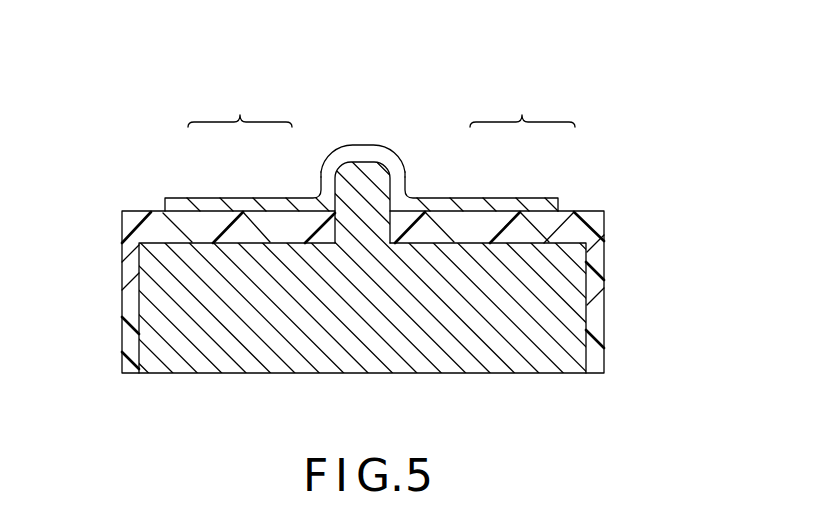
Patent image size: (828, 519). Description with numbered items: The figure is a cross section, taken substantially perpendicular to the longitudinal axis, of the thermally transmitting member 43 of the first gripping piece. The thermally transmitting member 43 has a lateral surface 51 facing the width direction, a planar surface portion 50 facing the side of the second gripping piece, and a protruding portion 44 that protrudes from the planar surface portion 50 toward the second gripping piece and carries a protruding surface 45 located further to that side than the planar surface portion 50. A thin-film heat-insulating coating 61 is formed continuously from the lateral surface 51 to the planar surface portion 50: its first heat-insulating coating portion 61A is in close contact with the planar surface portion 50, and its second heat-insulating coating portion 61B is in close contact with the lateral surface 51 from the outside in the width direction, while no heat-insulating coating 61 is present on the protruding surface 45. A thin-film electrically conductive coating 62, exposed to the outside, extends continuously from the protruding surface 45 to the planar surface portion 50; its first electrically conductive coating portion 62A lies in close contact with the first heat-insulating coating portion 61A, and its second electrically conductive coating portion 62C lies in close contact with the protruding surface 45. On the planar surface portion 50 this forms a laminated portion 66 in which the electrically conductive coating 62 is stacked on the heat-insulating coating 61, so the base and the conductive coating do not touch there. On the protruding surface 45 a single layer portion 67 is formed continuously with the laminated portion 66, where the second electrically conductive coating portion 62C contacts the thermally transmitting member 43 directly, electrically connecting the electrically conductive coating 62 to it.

The thermally transmitting member 43 is at (540, 362).
The protruding portion 44 is at (372, 173).
The protruding surface 45 is at (360, 159).
The planar surface portion 50 is at (141, 230).
The lateral surface 51 is at (139, 335).
The heat-insulating coating 61 is at (370, 247).
The first heat-insulating coating portion 61A is at (253, 221).
The second heat-insulating coating portion 61B is at (132, 300).
The electrically conductive coating 62 is at (361, 141).
The first electrically conductive coating portion 62A is at (222, 205).
The second electrically conductive coating portion 62C is at (344, 124).
The single layer portion 67 is at (344, 124).
The laminated portion 66 is at (381, 108).